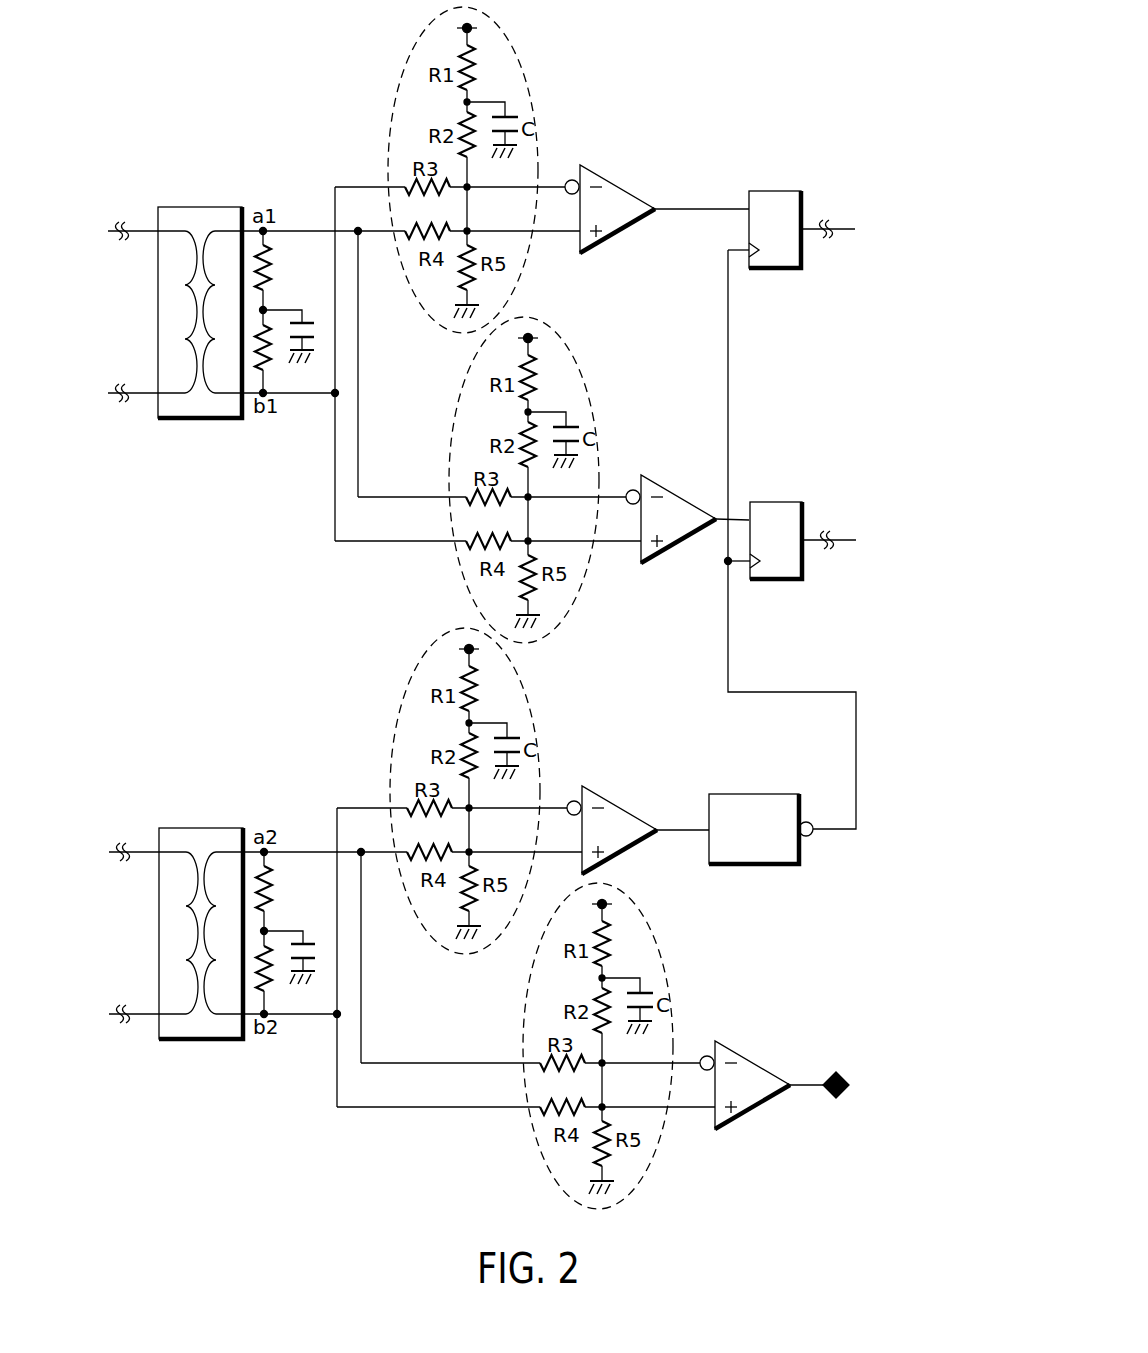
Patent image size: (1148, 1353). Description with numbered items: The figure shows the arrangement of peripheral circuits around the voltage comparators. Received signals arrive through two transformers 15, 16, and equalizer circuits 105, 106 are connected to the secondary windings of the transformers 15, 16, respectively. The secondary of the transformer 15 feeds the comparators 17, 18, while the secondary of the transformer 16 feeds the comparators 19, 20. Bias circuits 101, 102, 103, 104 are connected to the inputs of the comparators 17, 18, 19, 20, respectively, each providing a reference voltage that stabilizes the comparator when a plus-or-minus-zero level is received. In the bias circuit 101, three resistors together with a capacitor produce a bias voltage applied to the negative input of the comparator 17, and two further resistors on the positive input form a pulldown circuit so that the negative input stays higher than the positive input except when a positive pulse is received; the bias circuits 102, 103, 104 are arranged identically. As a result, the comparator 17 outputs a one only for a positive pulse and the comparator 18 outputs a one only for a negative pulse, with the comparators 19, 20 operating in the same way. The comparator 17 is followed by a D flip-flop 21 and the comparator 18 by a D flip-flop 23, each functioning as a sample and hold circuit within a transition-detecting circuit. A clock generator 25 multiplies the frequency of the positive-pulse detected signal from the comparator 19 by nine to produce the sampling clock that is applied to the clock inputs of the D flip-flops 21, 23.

The transformer 15 is at (211, 208).
The transformer 16 is at (211, 829).
The equalizer circuit 105 is at (273, 262).
The equalizer circuit 106 is at (274, 883).
The comparator 17 is at (603, 178).
The comparator 18 is at (664, 488).
The comparator 19 is at (605, 799).
The comparator 20 is at (738, 1054).
The D flip-flop 21 is at (777, 191).
The D flip-flop 23 is at (779, 502).
The clock generator 25 is at (748, 794).
The bias circuit 101 is at (539, 82).
The bias circuit 102 is at (599, 384).
The bias circuit 103 is at (544, 697).
The bias circuit 104 is at (672, 957).